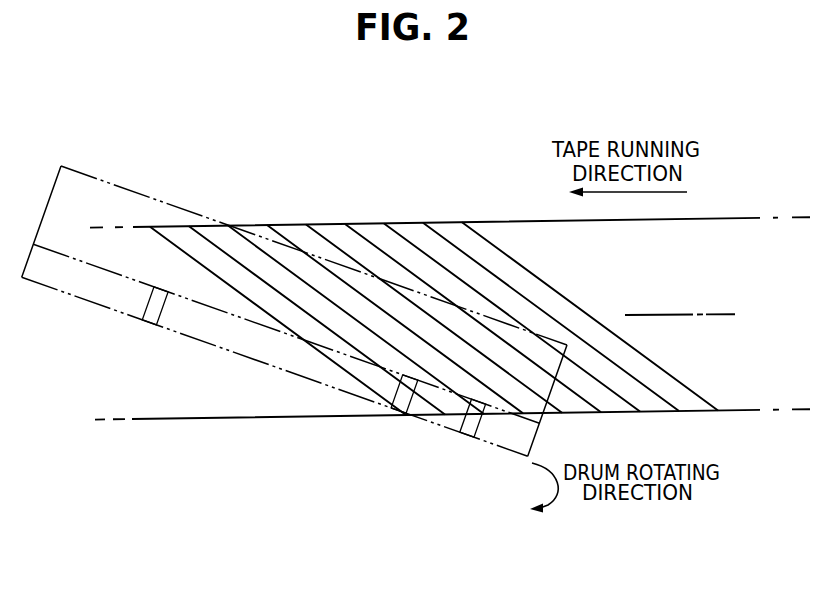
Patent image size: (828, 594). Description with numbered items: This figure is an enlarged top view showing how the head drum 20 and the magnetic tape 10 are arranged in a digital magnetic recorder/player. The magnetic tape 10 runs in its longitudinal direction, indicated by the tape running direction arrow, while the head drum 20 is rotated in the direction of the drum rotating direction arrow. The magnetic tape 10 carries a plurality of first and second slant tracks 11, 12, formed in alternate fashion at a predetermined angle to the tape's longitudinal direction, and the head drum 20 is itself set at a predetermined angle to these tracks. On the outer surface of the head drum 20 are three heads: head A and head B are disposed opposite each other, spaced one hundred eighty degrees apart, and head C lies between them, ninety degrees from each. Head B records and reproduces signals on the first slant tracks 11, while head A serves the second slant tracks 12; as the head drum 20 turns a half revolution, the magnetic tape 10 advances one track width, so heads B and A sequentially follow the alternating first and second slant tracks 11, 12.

The magnetic tape 10 is at (488, 207).
The first slant track 11 is at (175, 227).
The second slant track 12 is at (207, 227).
The head drum 20 is at (78, 173).
The head A is at (147, 322).
The head B is at (393, 417).
The head C is at (470, 437).